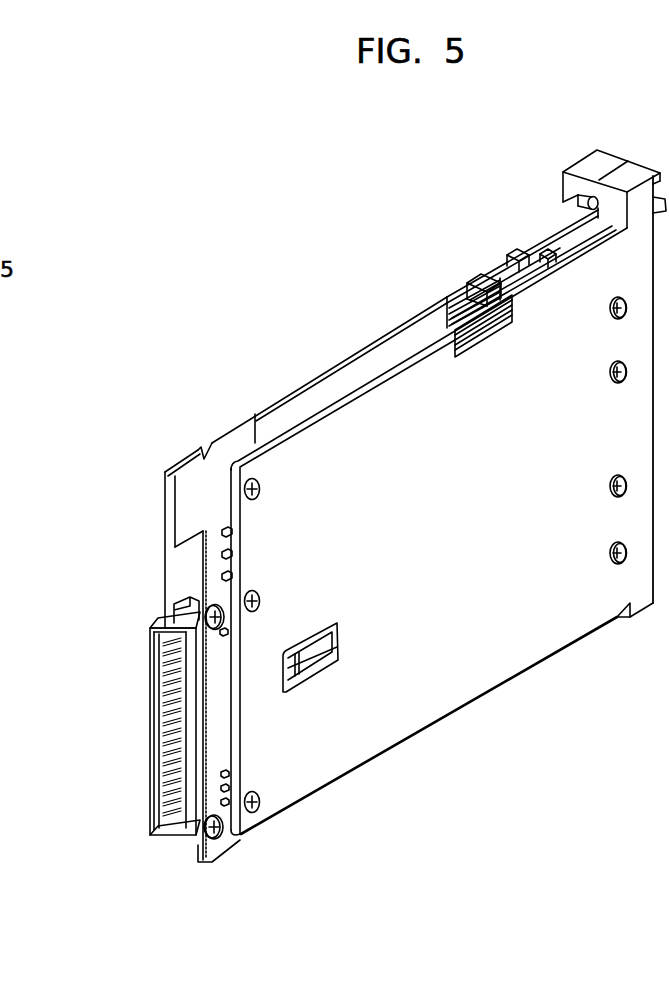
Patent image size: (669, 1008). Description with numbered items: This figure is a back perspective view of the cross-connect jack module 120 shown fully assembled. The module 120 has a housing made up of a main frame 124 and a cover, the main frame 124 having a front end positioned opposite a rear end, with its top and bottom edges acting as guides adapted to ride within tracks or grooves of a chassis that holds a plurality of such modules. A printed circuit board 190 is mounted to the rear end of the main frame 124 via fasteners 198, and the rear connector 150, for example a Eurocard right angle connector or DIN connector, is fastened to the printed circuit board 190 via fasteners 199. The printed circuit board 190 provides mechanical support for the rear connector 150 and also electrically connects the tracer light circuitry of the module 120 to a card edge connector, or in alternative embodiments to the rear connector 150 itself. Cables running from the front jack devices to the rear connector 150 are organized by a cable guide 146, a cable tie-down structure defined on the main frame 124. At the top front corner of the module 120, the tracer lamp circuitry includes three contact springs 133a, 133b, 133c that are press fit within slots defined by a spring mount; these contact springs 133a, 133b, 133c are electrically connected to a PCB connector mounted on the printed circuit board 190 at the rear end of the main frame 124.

The jack module 120 is at (318, 310).
The main frame 124 is at (492, 655).
The contact spring 133a is at (458, 300).
The contact spring 133b is at (472, 310).
The contact spring 133c is at (473, 326).
The cable guide 146 is at (312, 650).
The rear connector 150 is at (132, 770).
The printed circuit board 190 is at (188, 500).
The fasteners 198 is at (256, 808).
The fasteners 199 is at (219, 830).